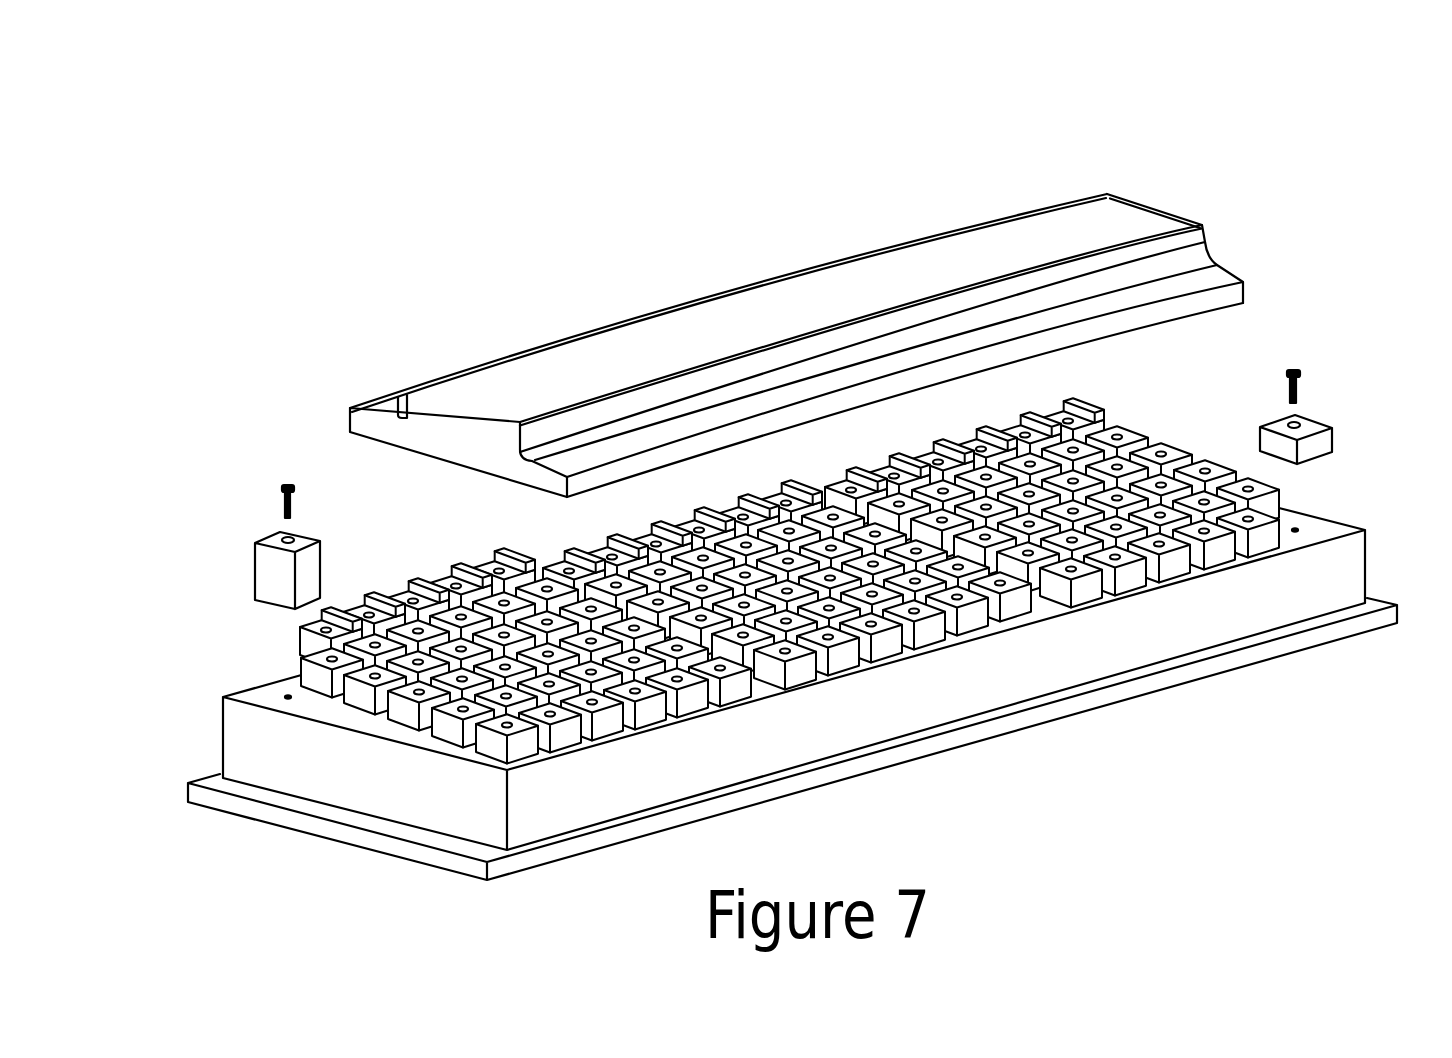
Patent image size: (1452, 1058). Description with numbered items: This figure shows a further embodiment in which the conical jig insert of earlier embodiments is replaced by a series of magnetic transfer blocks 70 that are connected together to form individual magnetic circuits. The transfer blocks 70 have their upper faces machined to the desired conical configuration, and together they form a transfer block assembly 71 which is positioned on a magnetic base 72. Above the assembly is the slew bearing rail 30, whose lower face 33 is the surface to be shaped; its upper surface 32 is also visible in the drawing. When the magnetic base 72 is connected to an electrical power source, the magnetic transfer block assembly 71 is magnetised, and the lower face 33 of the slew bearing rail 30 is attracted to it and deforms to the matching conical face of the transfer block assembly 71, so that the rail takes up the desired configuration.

The slew bearing rail 30 is at (837, 316).
The top surface of workpiece 32 is at (917, 272).
The lower face 33 is at (461, 468).
The magnetic transfer block 70 is at (273, 573).
The transfer block assembly 71 is at (1098, 411).
The magnetic base 72 is at (423, 796).